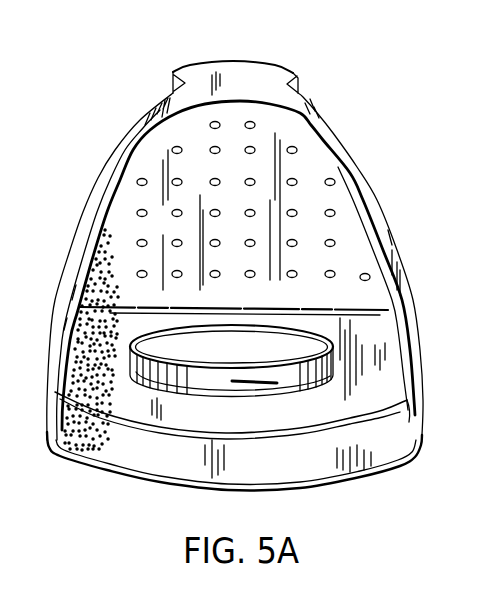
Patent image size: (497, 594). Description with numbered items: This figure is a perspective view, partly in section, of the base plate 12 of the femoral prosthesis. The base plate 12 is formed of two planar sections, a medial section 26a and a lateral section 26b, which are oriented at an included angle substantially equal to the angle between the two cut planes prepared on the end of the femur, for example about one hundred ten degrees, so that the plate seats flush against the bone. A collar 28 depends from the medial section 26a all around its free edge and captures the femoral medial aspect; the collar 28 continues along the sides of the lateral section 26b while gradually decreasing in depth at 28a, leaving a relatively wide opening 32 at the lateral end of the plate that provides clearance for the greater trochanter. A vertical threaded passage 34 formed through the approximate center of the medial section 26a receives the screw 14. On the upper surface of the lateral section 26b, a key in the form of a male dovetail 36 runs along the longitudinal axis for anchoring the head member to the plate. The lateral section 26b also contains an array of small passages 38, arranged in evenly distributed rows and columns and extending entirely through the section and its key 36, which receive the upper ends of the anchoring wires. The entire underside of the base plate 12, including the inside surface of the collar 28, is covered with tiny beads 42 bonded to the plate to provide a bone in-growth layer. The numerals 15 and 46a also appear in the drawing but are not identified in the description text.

The base plate 12 is at (271, 52).
The screw 14 is at (284, 72).
The flange 15 is at (318, 113).
The medial section 26a is at (393, 405).
The lateral section 26b is at (153, 148).
The collar 28 is at (416, 443).
The decreasing-depth collar portion 28a is at (97, 212).
The opening 32 is at (318, 153).
The vertical threaded passage 34 is at (218, 363).
The male dovetail 36 is at (193, 77).
The small passages 38 is at (170, 113).
The beads 42 is at (388, 326).
The compartment 46a is at (496, 264).